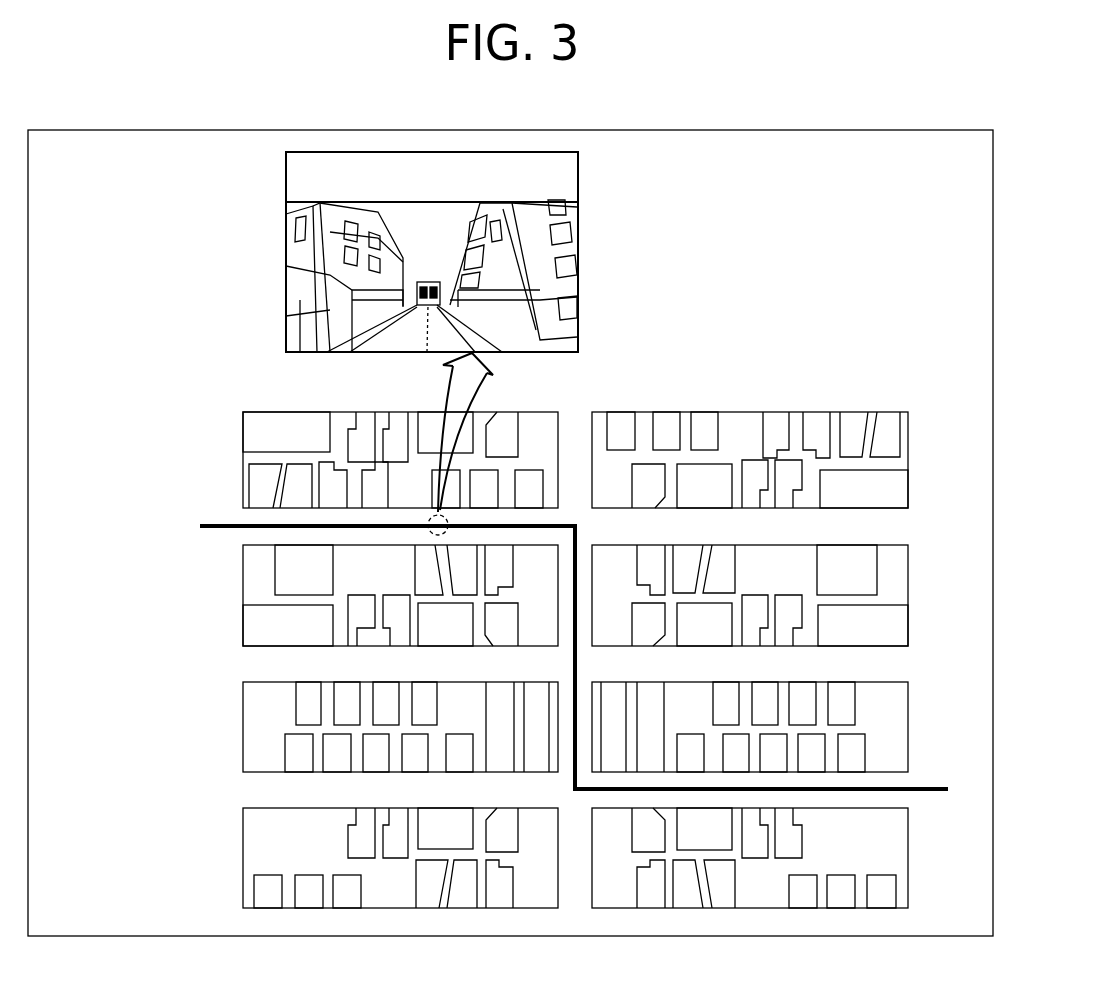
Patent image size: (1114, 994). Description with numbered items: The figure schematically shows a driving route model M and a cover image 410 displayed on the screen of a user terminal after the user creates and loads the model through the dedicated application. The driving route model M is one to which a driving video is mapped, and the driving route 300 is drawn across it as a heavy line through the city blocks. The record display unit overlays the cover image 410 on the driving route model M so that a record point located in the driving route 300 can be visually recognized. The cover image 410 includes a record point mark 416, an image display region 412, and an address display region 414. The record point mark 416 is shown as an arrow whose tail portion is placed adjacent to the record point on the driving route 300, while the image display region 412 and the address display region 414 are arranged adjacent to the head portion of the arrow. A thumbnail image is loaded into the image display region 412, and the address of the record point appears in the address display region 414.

The movement path (route) on map 300 is at (170, 515).
The cover image 410 is at (258, 255).
The image display region 412 is at (579, 282).
The address display region 414 is at (579, 176).
The record point mark 416 is at (450, 378).
The driving route model M is at (993, 515).